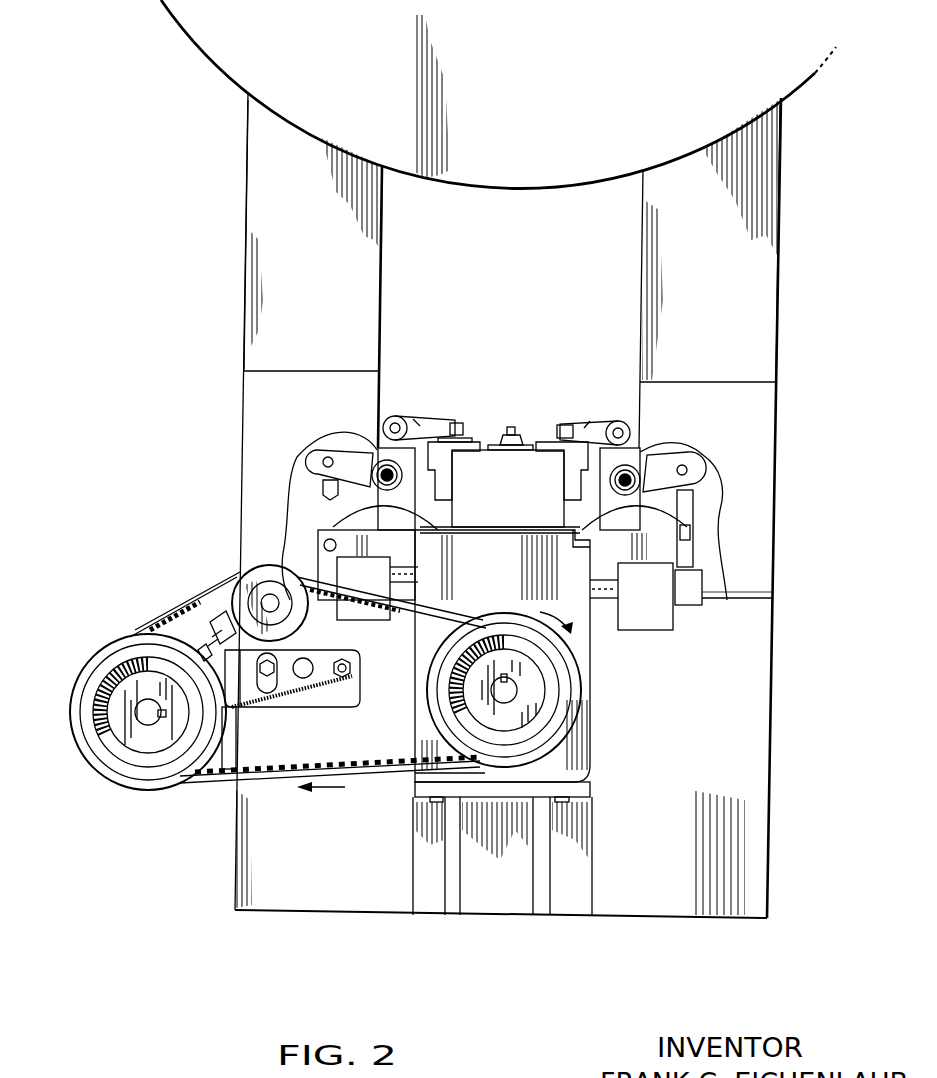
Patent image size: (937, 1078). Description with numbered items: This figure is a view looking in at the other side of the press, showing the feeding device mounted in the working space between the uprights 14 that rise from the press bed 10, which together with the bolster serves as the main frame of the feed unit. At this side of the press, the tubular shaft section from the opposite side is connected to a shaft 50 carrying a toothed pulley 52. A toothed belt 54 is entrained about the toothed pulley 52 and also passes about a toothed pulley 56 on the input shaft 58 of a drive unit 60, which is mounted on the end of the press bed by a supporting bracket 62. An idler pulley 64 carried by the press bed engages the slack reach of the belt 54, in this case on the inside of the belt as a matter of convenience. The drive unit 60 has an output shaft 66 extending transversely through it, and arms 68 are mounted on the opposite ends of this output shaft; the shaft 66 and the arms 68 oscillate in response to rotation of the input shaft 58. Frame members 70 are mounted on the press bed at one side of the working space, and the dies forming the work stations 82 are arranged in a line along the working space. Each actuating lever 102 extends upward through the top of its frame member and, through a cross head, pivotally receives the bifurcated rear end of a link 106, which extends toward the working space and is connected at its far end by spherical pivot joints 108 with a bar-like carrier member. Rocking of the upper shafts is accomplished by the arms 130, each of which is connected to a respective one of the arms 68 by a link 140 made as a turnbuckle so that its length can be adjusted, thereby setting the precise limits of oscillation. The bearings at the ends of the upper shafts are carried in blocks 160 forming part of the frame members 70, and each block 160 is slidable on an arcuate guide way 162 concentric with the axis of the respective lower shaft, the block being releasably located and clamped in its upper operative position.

The bed 10 is at (762, 746).
The uprights 14 is at (250, 243).
The shaft 50 is at (145, 709).
The toothed pulley 52 is at (100, 757).
The toothed belt 54 is at (216, 785).
The toothed pulley 56 is at (560, 738).
The input shaft 58 is at (512, 698).
The drive unit 60 is at (583, 697).
The supporting bracket 62 is at (567, 900).
The idler pulley 64 is at (240, 572).
The output shaft 66 is at (395, 602).
The arms 68 is at (347, 567).
The frame members 70 is at (393, 520).
The work stations 82 is at (505, 427).
The actuating lever 102 is at (383, 443).
The link 106 is at (413, 419).
The spherical pivot joints 108 is at (452, 442).
The arms 130 is at (323, 450).
The link 140 is at (682, 512).
The blocks 160 is at (403, 483).
The arcuate guide way 162 is at (330, 520).